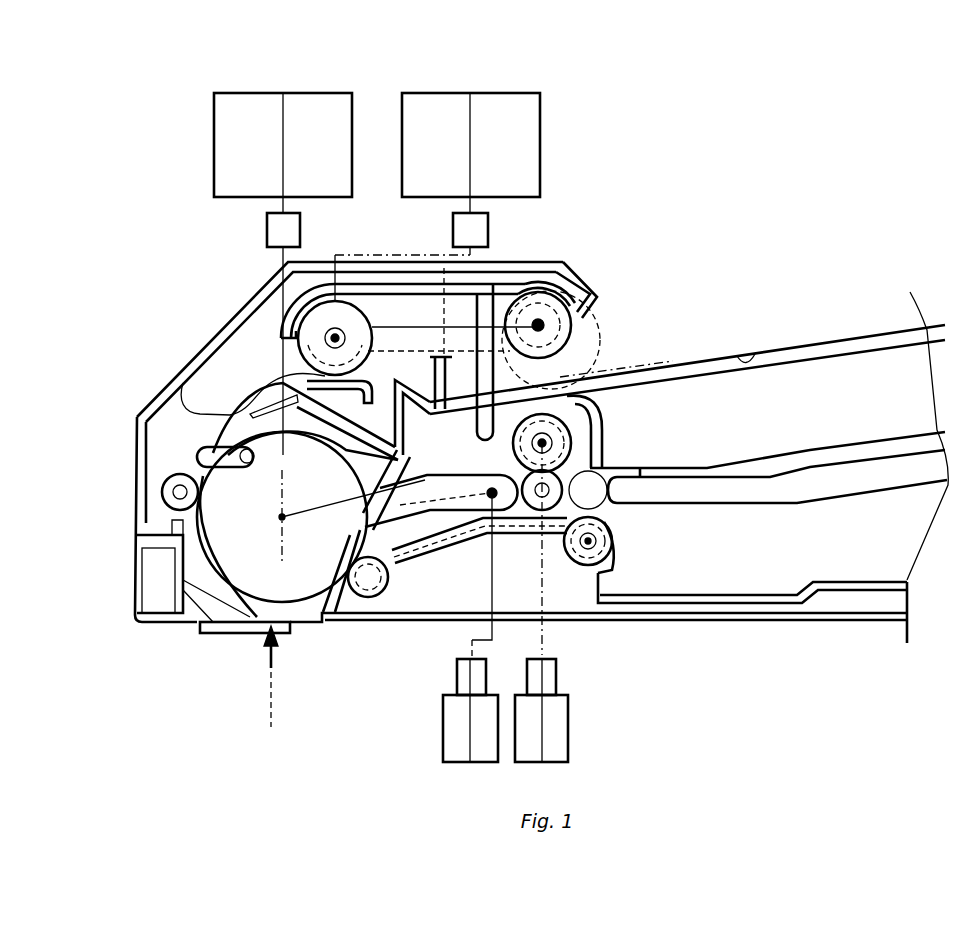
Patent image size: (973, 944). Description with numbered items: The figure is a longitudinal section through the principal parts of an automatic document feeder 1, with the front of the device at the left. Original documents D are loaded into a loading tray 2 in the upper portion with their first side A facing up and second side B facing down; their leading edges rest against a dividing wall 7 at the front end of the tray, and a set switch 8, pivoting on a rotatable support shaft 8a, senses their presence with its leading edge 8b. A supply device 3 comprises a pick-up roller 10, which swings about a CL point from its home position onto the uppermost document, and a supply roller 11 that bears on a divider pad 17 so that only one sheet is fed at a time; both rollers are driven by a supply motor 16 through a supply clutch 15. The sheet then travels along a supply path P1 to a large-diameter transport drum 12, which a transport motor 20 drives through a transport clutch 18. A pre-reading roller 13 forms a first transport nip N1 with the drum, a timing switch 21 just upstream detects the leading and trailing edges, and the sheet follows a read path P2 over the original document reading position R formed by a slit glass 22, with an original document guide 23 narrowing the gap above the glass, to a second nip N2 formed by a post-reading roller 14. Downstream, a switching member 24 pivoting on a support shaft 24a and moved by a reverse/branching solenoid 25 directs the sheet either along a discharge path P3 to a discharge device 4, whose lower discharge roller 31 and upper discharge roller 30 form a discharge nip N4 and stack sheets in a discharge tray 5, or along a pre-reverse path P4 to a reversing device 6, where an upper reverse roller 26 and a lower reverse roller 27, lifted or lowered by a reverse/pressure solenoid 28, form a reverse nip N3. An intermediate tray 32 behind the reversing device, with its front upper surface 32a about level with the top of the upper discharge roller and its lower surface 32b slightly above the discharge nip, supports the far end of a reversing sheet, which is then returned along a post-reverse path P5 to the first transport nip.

The automatic document feeder 1 is at (612, 240).
The loading tray 2 is at (822, 347).
The supply device 3 is at (290, 300).
The discharge device 4 is at (617, 570).
The discharge tray 5 is at (692, 588).
The reversing device 6 is at (604, 418).
The dividing wall 7 is at (440, 355).
The set switch 8 is at (493, 283).
The rotatable support shaft 8a is at (556, 277).
The leading edge 8b is at (469, 361).
The pick-up roller 10 is at (592, 308).
The supply roller 11 is at (275, 357).
The transport drum 12 is at (212, 598).
The pre-reading roller 13 is at (160, 490).
The post-reading roller 14 is at (390, 600).
The supply clutch 15 is at (453, 232).
The supply motor 16 is at (542, 120).
The divider pad 17 is at (362, 333).
The transport clutch 18 is at (300, 230).
The transport motor 20 is at (352, 108).
The timing switch 21 is at (97, 440).
The slit glass 22 is at (222, 636).
The original document guide 23 is at (318, 624).
The switching member 24 is at (470, 548).
The support shaft 24a is at (404, 455).
The reverse/branching solenoid 25 is at (443, 730).
The upper reverse roller 26 is at (510, 452).
The lower reverse roller 27 is at (565, 570).
The reverse/pressure solenoid 28 is at (568, 730).
The upper discharge roller 30 is at (604, 462).
The lower discharge roller 31 is at (614, 542).
The intermediate tray 32 is at (770, 468).
The upper surface 32a is at (702, 468).
The lower surface 32b is at (700, 505).
The CL point CL is at (445, 268).
The supply path P1 is at (182, 385).
The read path P2 is at (137, 566).
The discharge path P3 is at (455, 582).
The pre-reverse path P4 is at (345, 492).
The post-reverse path P5 is at (268, 377).
The first transport nip N1 is at (228, 521).
The second transport nip N2 is at (345, 560).
The reverse nip N3 is at (588, 410).
The discharge nip N4 is at (610, 505).
The first side A is at (715, 357).
The second side B is at (763, 351).
The original documents D is at (706, 276).
The original document reading position R is at (279, 676).